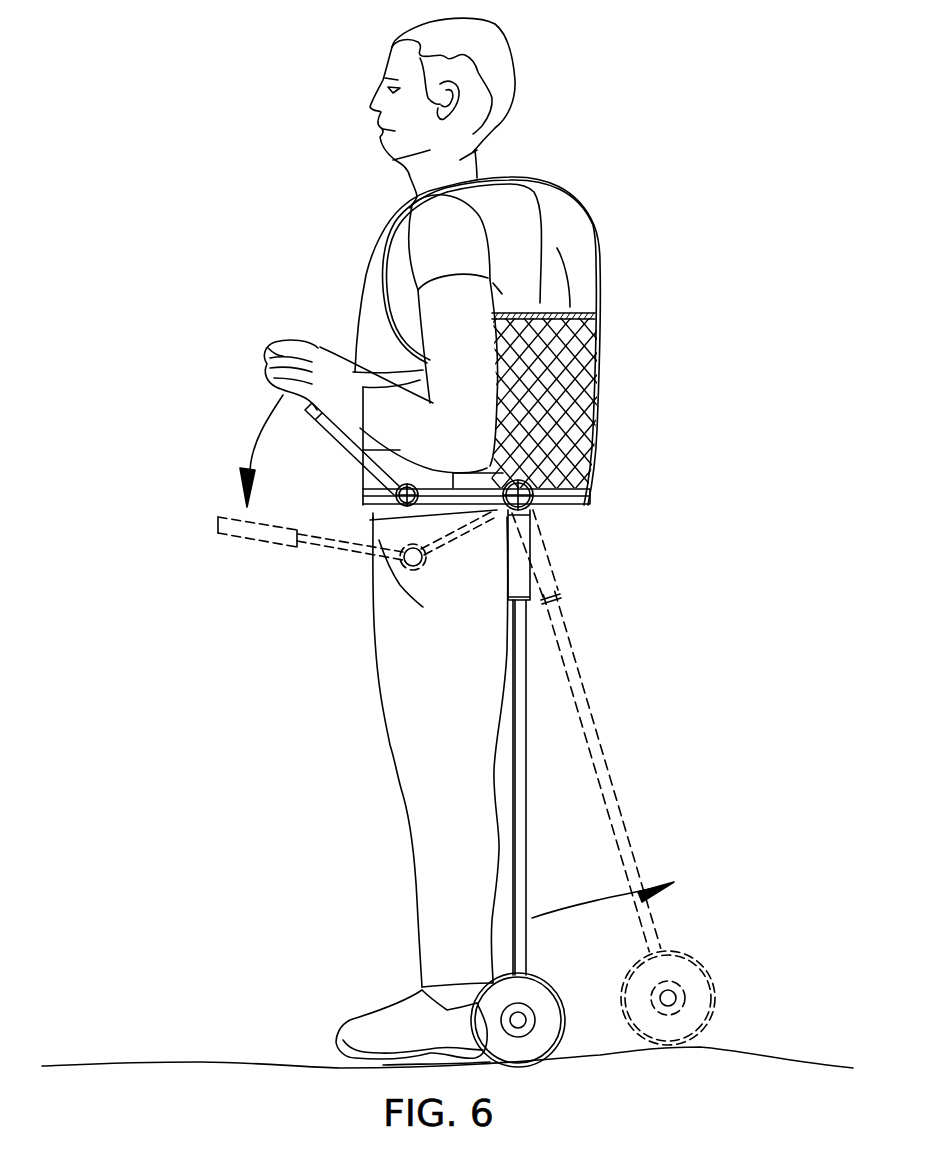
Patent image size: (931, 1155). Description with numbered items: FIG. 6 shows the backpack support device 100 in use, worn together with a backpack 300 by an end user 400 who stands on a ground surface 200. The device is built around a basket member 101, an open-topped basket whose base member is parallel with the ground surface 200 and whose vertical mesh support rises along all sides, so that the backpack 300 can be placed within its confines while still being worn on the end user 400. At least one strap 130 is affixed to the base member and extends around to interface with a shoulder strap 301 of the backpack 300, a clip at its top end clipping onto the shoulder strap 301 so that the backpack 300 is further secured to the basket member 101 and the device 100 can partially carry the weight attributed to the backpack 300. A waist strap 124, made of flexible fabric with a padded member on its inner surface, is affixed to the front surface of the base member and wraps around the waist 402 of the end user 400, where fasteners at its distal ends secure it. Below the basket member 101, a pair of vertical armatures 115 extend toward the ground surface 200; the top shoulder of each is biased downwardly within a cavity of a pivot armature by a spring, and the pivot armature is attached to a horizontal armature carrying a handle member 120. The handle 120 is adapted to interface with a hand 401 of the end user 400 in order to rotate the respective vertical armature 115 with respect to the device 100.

The backpack support device 100 is at (118, 100).
The basket member 101 is at (607, 297).
The vertical armatures 115 is at (528, 710).
The handle member 120 is at (264, 358).
The waist strap 124 is at (363, 487).
The strap 130 is at (583, 226).
The ground surface 200 is at (198, 1062).
The backpack 300 is at (508, 283).
The shoulder strap 301 is at (412, 205).
The end user 400 is at (490, 132).
The hand 401 is at (297, 355).
The waist 402 is at (372, 512).